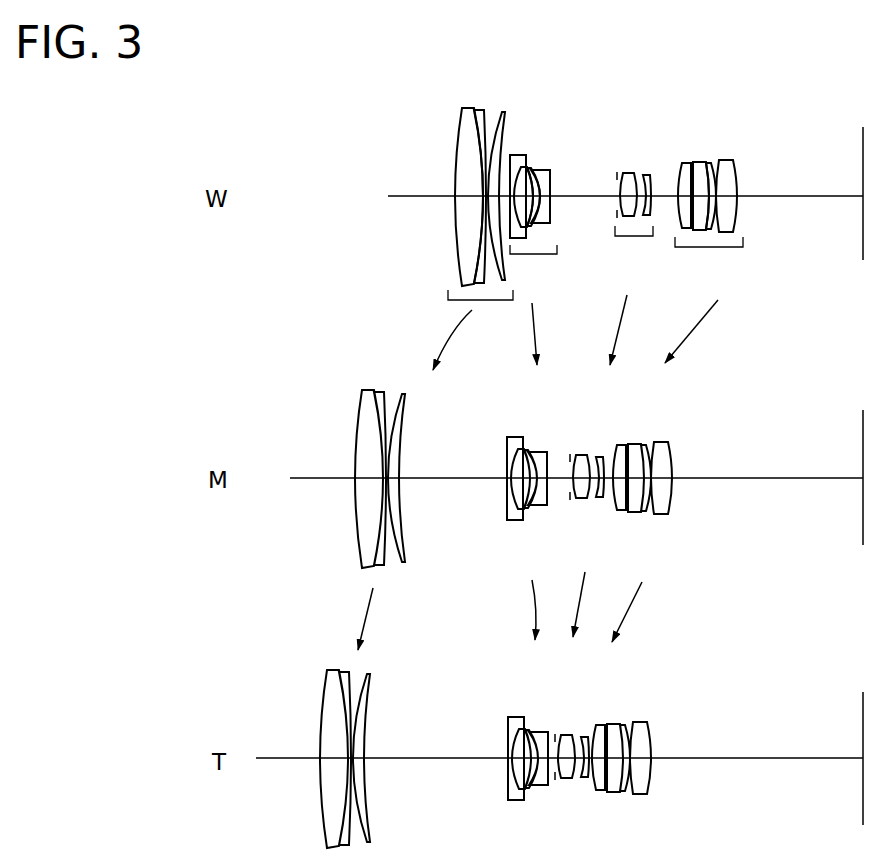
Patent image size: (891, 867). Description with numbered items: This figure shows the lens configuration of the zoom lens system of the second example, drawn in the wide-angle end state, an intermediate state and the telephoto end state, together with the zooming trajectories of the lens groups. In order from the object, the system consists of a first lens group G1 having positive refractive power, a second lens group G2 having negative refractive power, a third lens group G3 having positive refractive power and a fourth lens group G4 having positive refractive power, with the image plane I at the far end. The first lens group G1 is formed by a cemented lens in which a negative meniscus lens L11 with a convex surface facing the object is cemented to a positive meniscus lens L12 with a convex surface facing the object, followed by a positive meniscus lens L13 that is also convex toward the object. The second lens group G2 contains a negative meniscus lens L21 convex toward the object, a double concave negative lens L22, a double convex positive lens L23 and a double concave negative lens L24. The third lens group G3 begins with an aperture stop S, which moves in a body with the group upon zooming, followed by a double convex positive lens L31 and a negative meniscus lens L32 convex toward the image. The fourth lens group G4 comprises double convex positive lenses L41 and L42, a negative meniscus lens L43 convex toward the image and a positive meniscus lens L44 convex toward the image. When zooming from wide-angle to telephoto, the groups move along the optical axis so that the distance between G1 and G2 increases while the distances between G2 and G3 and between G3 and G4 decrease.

The negative meniscus lens L11 is at (466, 108).
The positive meniscus lens L12 is at (478, 110).
The positive meniscus lens L13 is at (505, 116).
The first lens group G1 is at (480, 308).
The negative meniscus lens L21 is at (515, 153).
The double concave negative lens L22 is at (522, 167).
The double convex positive lens L23 is at (536, 168).
The double concave negative lens L24 is at (545, 170).
The second lens group G2 is at (536, 261).
The aperture stop S is at (616, 173).
The double convex positive lens L31 is at (629, 172).
The negative meniscus lens L32 is at (644, 174).
The third lens group G3 is at (634, 245).
The double convex positive lens L41 is at (684, 162).
The double convex positive lens L42 is at (696, 162).
The negative meniscus lens L43 is at (712, 162).
The positive meniscus lens L44 is at (724, 160).
The fourth lens group G4 is at (709, 257).
The image plane I is at (863, 160).